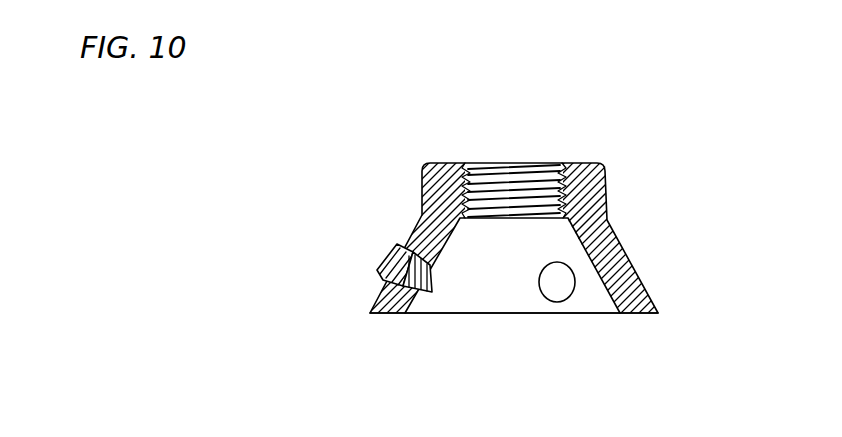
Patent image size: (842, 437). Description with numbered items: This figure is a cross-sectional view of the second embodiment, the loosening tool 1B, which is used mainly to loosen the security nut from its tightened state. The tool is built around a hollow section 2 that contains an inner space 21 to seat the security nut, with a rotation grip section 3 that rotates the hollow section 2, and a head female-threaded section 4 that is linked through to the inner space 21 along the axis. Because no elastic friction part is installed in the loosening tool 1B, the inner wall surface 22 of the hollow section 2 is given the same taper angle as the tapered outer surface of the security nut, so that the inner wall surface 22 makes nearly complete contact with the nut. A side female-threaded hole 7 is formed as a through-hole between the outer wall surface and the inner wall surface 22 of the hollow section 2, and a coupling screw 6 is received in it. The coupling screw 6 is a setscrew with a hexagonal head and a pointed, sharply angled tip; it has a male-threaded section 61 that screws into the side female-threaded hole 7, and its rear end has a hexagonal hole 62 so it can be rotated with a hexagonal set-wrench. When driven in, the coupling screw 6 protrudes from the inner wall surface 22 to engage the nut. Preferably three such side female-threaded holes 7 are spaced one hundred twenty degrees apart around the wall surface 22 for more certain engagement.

The loosening tool 1B is at (348, 124).
The hollow section 2 is at (630, 258).
The rotation grip section 3 is at (573, 165).
The head female-threaded section 4 is at (492, 172).
The coupling screw 6 is at (385, 298).
The side female-threaded hole 7 is at (557, 303).
The inner space 21 is at (490, 276).
The inner wall surface 22 is at (610, 303).
The male-threaded section 61 is at (378, 278).
The hexagonal hole 62 is at (390, 252).